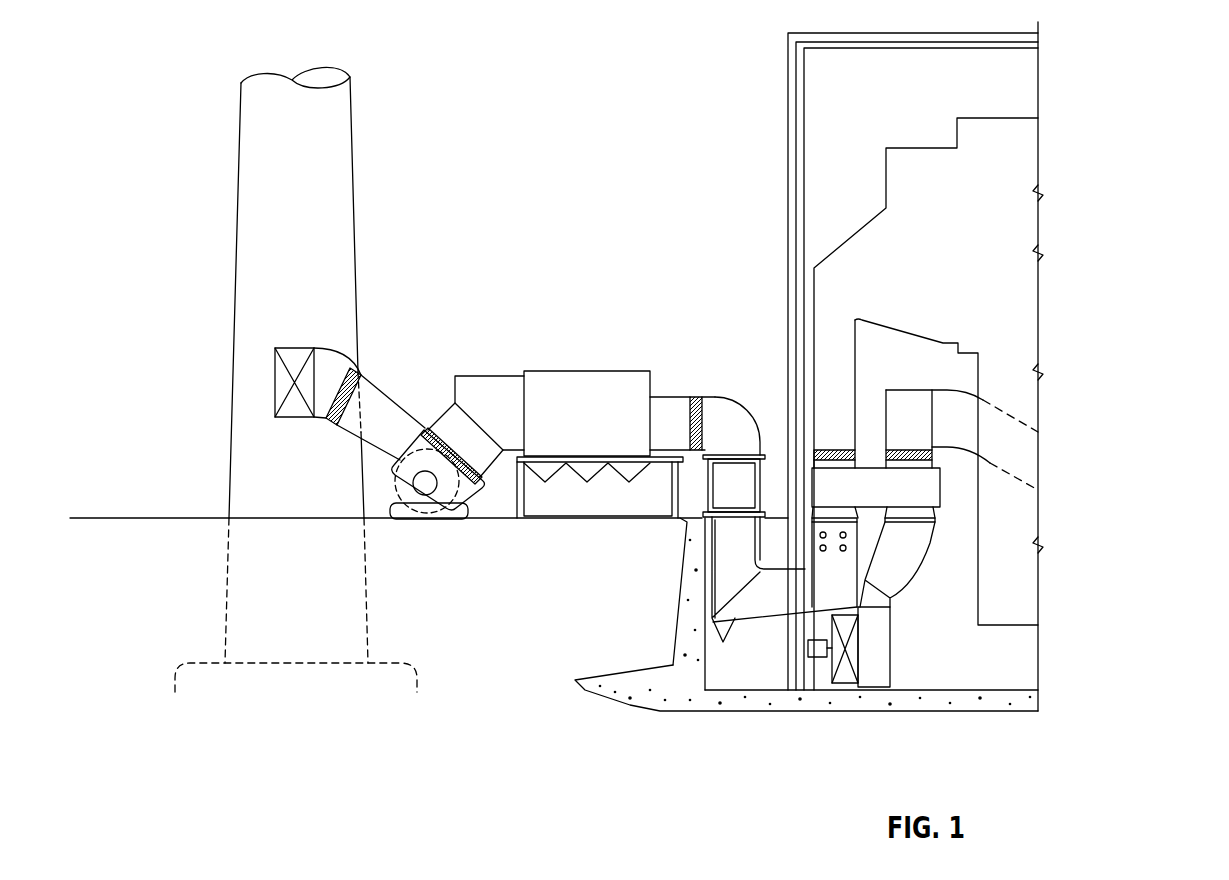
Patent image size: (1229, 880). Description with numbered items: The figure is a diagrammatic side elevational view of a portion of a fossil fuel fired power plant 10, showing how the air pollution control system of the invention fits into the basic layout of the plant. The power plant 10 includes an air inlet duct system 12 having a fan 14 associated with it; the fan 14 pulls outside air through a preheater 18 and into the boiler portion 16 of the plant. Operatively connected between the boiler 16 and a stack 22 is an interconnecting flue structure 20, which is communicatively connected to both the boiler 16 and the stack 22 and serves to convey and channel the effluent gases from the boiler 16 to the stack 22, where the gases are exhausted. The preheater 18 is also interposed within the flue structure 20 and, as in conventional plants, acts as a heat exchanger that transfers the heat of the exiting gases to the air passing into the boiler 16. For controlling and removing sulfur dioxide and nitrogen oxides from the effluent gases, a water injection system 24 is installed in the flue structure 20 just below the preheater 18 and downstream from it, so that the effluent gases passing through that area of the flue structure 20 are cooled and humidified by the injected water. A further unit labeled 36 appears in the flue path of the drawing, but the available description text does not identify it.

The fossil fuel fired power plant 10 is at (1142, 205).
The air inlet duct system 12 is at (937, 615).
The fan 14 is at (843, 681).
The boiler portion 16 is at (1030, 257).
The preheater 18 is at (820, 477).
The flue structure 20 is at (673, 383).
The stack 22 is at (352, 290).
The water injection system 24 is at (827, 560).
The gas cleaning unit 36 is at (578, 376).